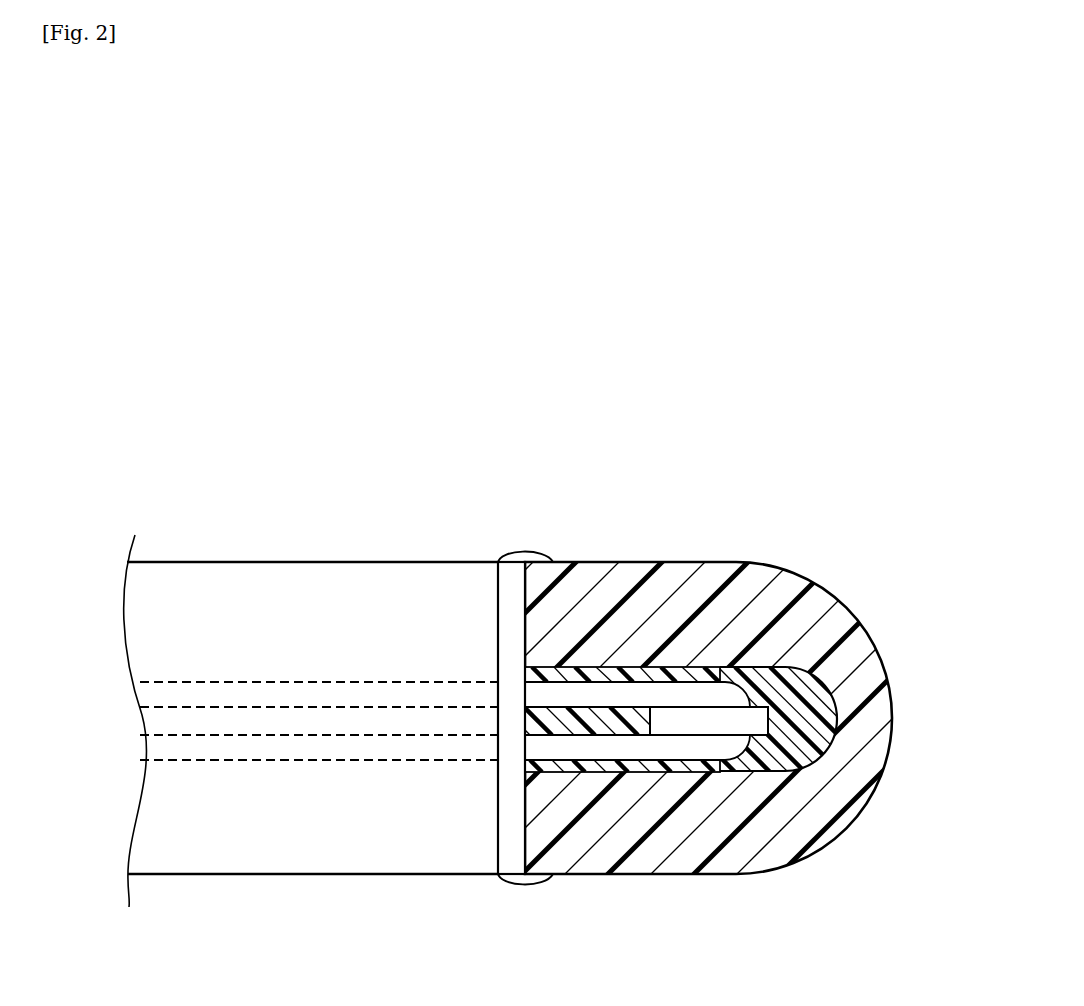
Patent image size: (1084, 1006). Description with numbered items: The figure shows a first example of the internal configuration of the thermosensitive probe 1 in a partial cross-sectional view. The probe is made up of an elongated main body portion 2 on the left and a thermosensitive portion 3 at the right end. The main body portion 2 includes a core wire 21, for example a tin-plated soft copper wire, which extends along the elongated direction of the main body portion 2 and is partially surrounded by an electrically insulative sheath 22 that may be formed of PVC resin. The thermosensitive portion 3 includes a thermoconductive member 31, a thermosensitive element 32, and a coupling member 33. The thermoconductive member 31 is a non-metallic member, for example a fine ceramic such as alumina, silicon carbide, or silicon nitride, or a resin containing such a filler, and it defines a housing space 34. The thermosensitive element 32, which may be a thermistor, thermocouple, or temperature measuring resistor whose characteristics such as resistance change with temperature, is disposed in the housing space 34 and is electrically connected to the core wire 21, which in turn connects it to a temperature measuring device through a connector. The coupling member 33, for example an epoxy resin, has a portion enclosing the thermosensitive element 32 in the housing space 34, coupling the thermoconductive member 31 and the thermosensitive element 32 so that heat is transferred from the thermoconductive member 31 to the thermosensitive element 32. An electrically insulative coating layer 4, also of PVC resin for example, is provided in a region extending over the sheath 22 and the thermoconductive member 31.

The thermosensitive probe 1 is at (531, 348).
The main body portion 2 is at (266, 482).
The thermosensitive portion 3 is at (738, 488).
The coating layer 4 is at (508, 572).
The core wire 21 is at (178, 688).
The sheath 22 is at (291, 590).
The thermoconductive member 31 is at (788, 592).
The thermosensitive element 32 is at (705, 725).
The coupling member 33 is at (803, 723).
The housing space 34 is at (801, 759).